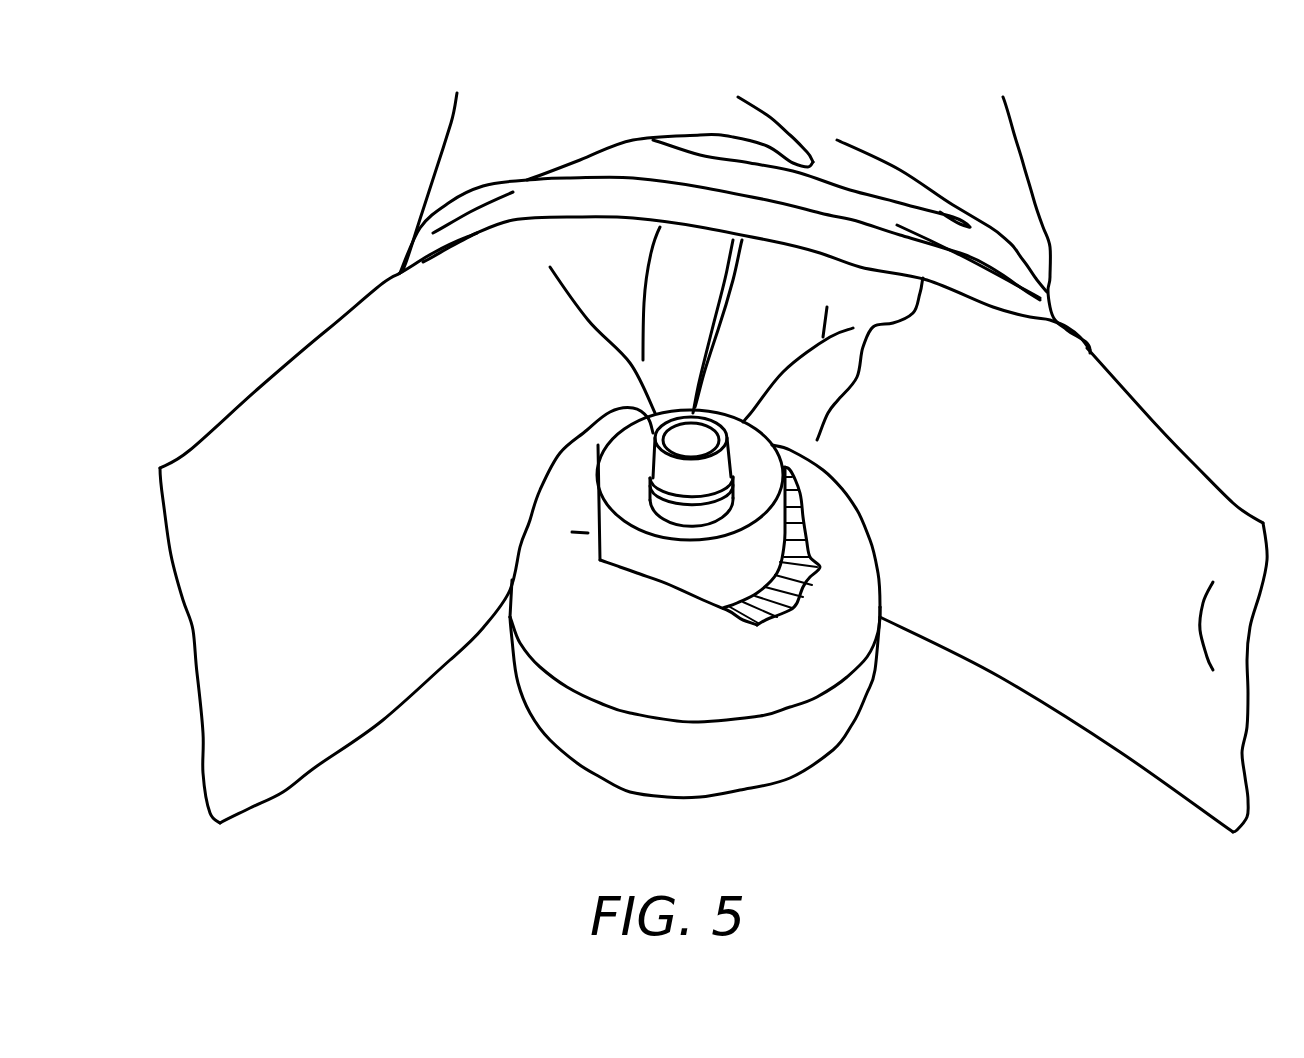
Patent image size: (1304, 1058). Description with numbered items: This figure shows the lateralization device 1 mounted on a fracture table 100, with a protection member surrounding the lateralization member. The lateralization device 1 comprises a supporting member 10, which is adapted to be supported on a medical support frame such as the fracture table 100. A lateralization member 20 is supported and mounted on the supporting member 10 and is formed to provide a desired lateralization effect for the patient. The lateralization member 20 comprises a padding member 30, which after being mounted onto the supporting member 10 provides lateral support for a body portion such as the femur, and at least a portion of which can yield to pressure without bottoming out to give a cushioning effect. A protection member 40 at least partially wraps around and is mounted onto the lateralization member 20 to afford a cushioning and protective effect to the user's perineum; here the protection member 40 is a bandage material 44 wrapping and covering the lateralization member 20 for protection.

The lateralization device 1 is at (687, 629).
The supporting member 10 is at (633, 408).
The lateralization member 20 is at (623, 487).
The padding member 30 is at (598, 475).
The protection member 40 is at (741, 645).
The bandage material 44 is at (772, 683).
The fracture table 100 is at (1262, 165).